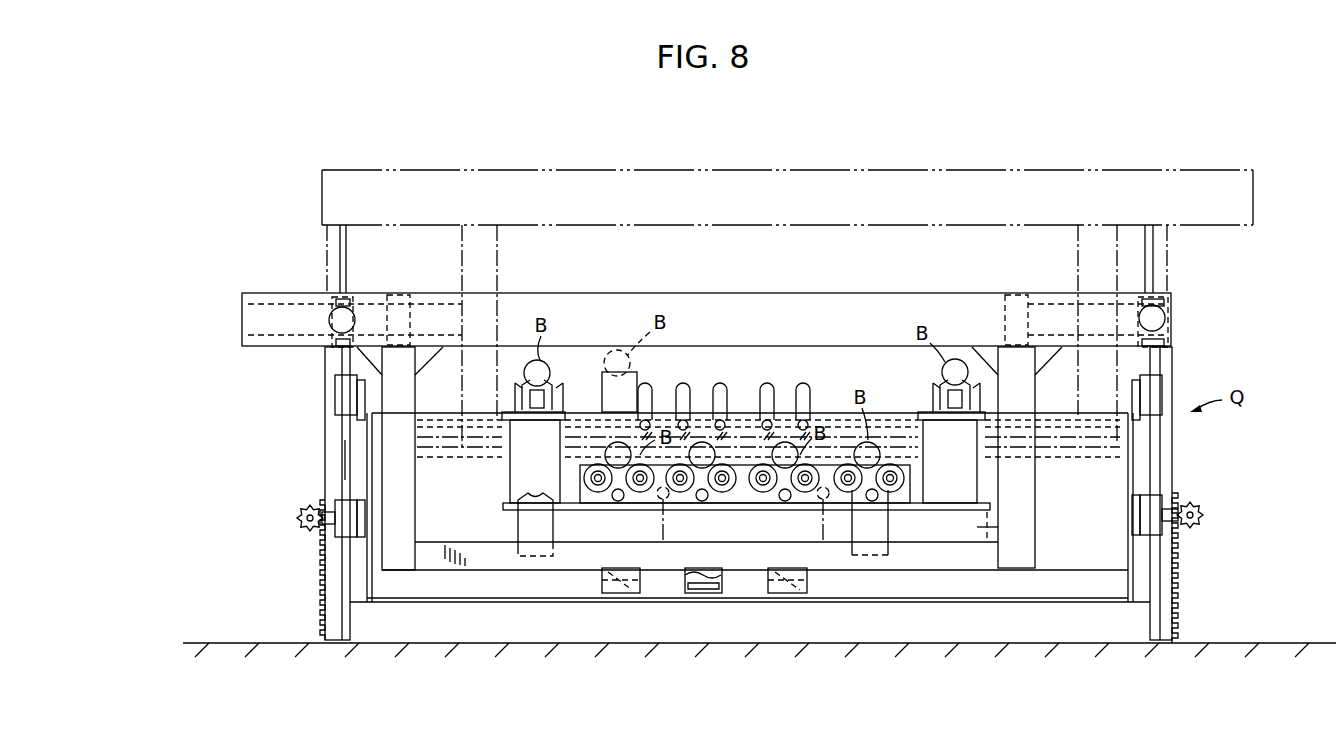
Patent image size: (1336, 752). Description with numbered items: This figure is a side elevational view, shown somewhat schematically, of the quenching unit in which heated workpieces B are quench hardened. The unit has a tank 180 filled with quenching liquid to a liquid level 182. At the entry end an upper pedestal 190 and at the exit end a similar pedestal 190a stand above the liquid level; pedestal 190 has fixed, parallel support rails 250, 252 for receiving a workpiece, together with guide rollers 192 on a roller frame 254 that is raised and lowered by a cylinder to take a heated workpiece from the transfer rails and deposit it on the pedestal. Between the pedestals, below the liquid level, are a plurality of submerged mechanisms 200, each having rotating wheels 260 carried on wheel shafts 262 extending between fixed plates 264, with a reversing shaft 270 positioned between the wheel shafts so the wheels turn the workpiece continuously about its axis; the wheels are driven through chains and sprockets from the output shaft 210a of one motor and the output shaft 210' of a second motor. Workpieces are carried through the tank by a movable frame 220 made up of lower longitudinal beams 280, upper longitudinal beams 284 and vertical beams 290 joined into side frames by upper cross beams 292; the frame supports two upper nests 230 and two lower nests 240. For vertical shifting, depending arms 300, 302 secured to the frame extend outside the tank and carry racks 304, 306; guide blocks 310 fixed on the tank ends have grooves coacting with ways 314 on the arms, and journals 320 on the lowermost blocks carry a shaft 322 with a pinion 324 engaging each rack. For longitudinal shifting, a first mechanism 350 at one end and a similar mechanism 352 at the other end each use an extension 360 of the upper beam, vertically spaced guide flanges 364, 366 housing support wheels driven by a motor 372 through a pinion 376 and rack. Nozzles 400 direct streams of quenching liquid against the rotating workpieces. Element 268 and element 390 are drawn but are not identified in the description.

The tank 180 is at (1133, 577).
The liquid level 182 is at (1105, 420).
The upper pedestal 190 is at (518, 393).
The upper pedestal 190a is at (932, 400).
The guide rollers 192 is at (530, 405).
The submerged mechanism 200 is at (605, 515).
The output shaft 210a is at (672, 525).
The output shaft 210' is at (822, 525).
The movable frame 220 is at (612, 166).
The upper nest 230 is at (640, 372).
The lower nest 240 is at (625, 593).
The support rail 250 is at (532, 364).
The support rail 252 is at (548, 368).
The roller frame 254 is at (1000, 436).
The rotating wheel 260 is at (608, 460).
The wheel shaft 262 is at (663, 500).
The fixed plate 264 is at (587, 495).
The side plate 268 is at (980, 527).
The reversing shaft 270 is at (618, 500).
The lower longitudinal beam 280 is at (448, 562).
The upper longitudinal beam 284 is at (900, 168).
The vertical beam 290 is at (417, 478).
The upper cross beam 292 is at (411, 318).
The depending arm 300 is at (325, 464).
The depending arm 302 is at (1165, 470).
The rack 304 is at (324, 570).
The rack 306 is at (1180, 600).
The guide block 310 is at (340, 412).
The way 314 is at (347, 462).
The journal 320 is at (312, 530).
The shaft 322 is at (297, 520).
The pinion 324 is at (313, 508).
The first mechanism 350 is at (325, 344).
The second mechanism 352 is at (1178, 306).
The extension 360 is at (268, 293).
The guide flange 364 is at (246, 312).
The guide flange 366 is at (262, 349).
The motor 372 is at (329, 322).
The pinion 376 is at (357, 297).
The center base block 390 is at (705, 593).
The nozzle 400 is at (685, 380).